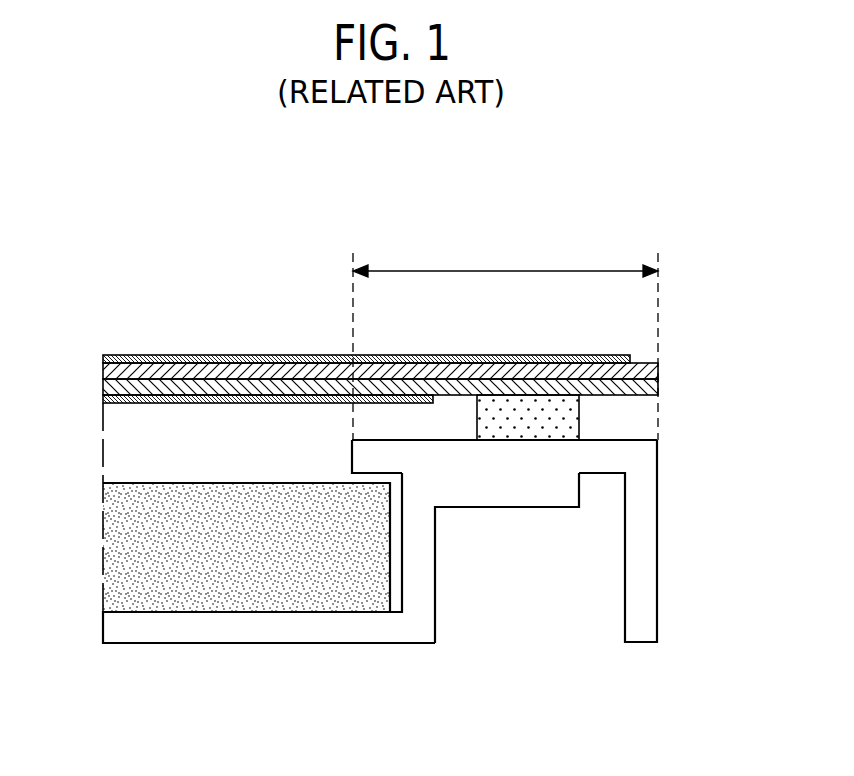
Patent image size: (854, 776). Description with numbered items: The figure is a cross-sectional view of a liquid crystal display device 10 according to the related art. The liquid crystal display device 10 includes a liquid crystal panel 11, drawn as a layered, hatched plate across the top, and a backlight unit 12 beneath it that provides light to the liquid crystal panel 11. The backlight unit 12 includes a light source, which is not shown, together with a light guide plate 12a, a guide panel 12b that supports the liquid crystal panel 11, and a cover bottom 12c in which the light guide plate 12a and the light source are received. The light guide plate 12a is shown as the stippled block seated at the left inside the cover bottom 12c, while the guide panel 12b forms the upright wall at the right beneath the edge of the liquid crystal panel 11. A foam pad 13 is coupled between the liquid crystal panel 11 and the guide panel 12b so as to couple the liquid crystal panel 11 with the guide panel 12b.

The liquid crystal display device 10 is at (127, 247).
The liquid crystal panel 11 is at (645, 371).
The backlight unit 12 is at (383, 580).
The light guide plate 12a is at (269, 555).
The guide panel 12b is at (645, 630).
The cover bottom 12c is at (505, 492).
The foam pad 13 is at (573, 418).